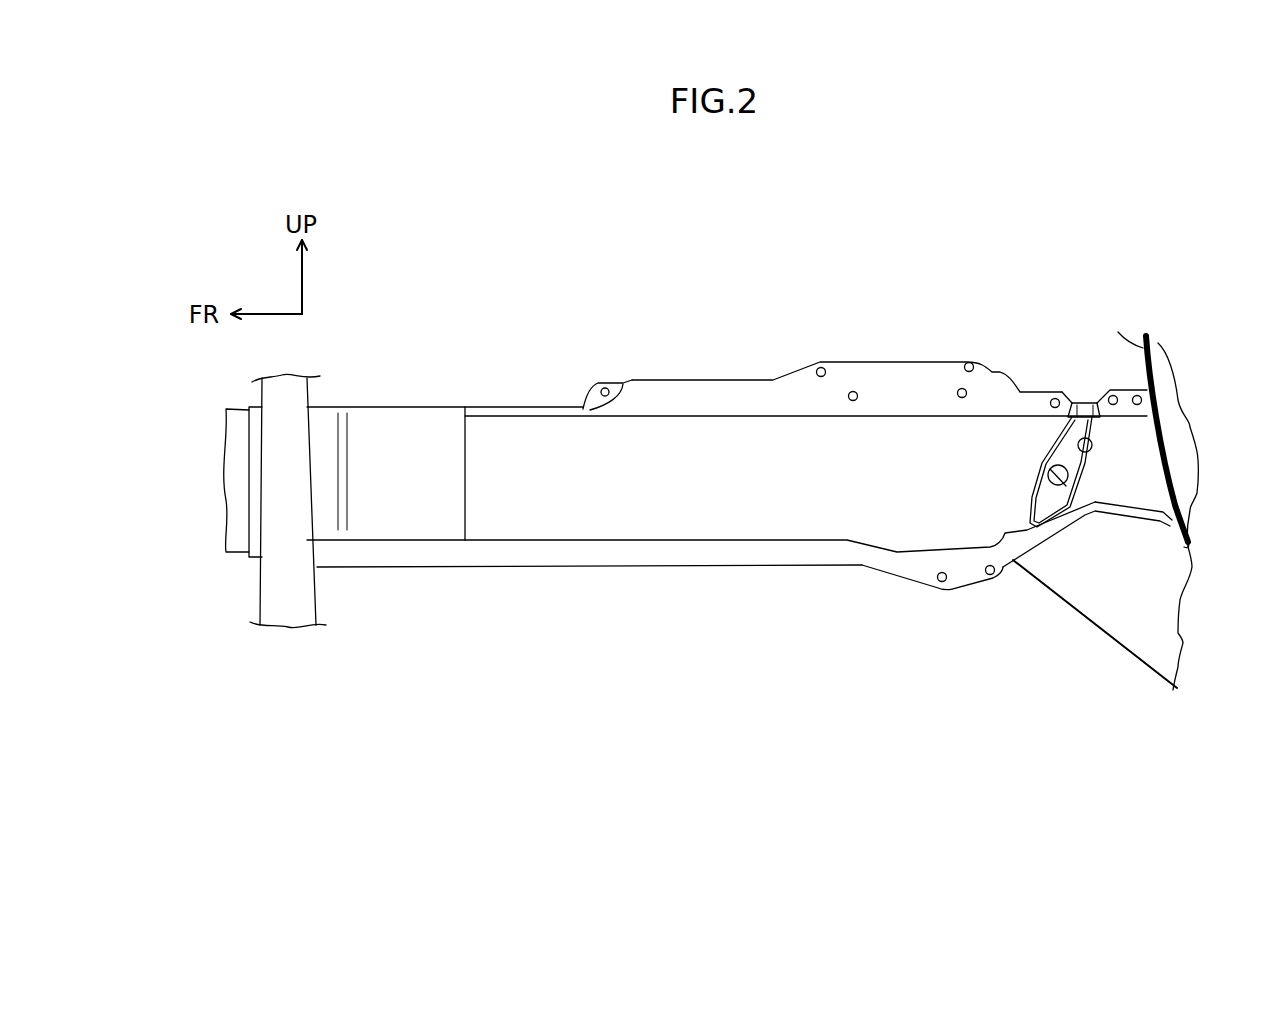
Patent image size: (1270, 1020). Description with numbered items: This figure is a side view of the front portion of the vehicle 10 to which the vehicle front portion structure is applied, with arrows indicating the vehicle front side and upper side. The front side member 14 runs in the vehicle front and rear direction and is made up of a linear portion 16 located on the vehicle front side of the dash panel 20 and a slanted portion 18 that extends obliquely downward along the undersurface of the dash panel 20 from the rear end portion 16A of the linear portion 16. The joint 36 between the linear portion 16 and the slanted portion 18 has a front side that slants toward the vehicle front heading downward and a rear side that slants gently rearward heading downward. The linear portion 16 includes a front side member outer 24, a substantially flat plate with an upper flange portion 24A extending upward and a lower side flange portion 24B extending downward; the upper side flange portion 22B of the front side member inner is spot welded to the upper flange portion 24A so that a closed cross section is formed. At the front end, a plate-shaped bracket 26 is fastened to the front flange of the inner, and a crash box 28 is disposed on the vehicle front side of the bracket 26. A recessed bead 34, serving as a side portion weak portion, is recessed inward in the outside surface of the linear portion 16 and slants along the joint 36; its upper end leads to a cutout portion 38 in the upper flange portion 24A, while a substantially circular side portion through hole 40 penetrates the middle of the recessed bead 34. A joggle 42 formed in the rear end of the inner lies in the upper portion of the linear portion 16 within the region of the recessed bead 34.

The vehicle 10 is at (665, 690).
The front side member 14 is at (770, 603).
The linear portion 16 is at (622, 567).
The rear end portion 16A is at (1143, 520).
The slanted portion 18 is at (1103, 637).
The dash panel 20 is at (1143, 362).
The upper side flange portion 22B is at (613, 382).
The front side member outer 24 is at (725, 567).
The upper flange portion 24A is at (918, 360).
The lower side flange portion 24B is at (830, 557).
The bracket 26 is at (317, 605).
The crash box 28 is at (237, 406).
The recessed bead 34 is at (1090, 443).
The joint 36 is at (1067, 533).
The cutout portion 38 is at (1070, 398).
The side portion through hole 40 is at (1070, 470).
The joggle 42 is at (1089, 401).